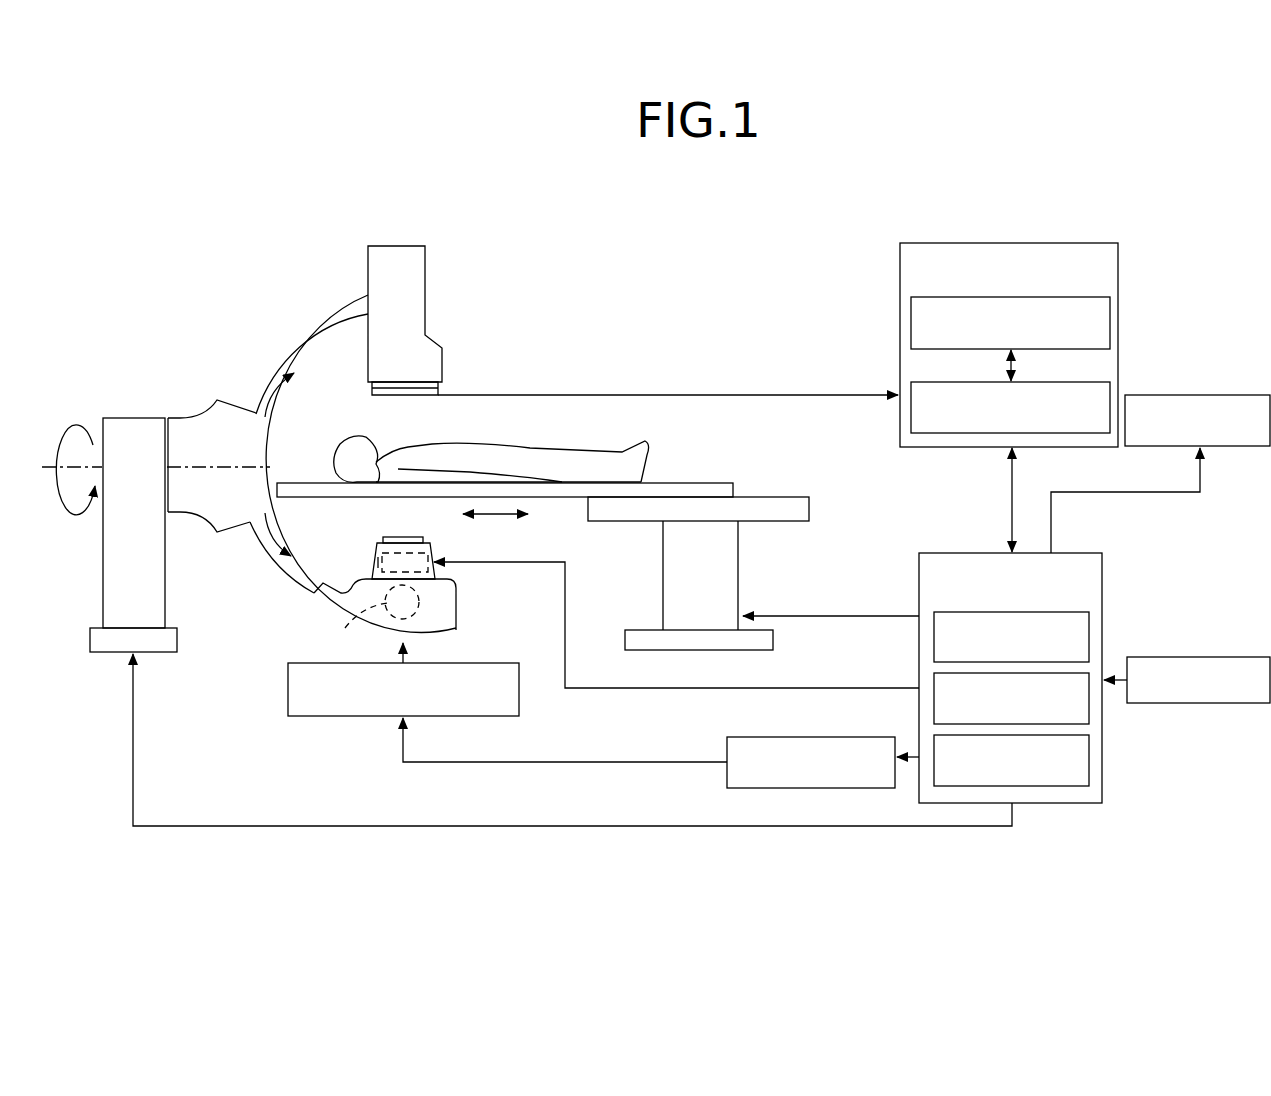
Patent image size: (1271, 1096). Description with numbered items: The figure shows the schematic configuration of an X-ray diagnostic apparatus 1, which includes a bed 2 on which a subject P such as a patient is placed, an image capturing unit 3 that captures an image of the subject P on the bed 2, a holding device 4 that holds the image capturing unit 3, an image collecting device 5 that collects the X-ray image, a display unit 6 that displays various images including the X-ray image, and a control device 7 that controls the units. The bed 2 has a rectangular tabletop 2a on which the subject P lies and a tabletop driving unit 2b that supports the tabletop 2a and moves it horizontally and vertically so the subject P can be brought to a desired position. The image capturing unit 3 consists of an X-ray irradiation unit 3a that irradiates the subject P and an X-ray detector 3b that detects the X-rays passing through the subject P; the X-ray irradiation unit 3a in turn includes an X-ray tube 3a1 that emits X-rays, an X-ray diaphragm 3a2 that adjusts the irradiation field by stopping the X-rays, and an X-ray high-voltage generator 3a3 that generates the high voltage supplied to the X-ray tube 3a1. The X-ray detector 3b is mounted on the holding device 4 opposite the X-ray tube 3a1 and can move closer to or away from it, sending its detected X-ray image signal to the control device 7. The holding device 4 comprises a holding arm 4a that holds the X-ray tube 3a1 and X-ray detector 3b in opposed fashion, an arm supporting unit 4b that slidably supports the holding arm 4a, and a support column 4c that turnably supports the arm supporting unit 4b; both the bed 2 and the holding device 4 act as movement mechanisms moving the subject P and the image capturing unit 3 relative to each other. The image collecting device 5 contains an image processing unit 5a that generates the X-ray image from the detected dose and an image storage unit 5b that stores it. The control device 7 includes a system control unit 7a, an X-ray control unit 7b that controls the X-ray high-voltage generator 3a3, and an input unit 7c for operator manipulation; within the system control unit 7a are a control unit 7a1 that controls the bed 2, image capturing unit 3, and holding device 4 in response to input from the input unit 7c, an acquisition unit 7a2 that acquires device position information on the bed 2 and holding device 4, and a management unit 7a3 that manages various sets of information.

The X-ray diagnostic apparatus 1 is at (276, 203).
The bed 2 is at (822, 505).
The tabletop 2a is at (678, 481).
The tabletop driving unit 2b is at (672, 573).
The image capturing unit 3 is at (466, 335).
The X-ray irradiation unit 3a is at (465, 604).
The X-ray tube 3a1 is at (350, 626).
The X-ray diaphragm 3a2 is at (373, 562).
The X-ray high-voltage generator 3a3 is at (322, 717).
The X-ray detector 3b is at (442, 392).
The holding device 4 is at (183, 338).
The holding arm 4a is at (275, 348).
The arm supporting unit 4b is at (190, 425).
The support column 4c is at (133, 419).
The image collecting device 5 is at (1016, 243).
The image processing unit 5a is at (1113, 312).
The image storage unit 5b is at (1113, 392).
The display unit 6 is at (1203, 395).
The control device 7 is at (1206, 572).
The system control unit 7a is at (1073, 553).
The control unit 7a1 is at (1093, 631).
The acquisition unit 7a2 is at (1092, 704).
The management unit 7a3 is at (1092, 756).
The X-ray control unit 7b is at (845, 737).
The input unit 7c is at (1203, 657).
The subject P is at (465, 456).